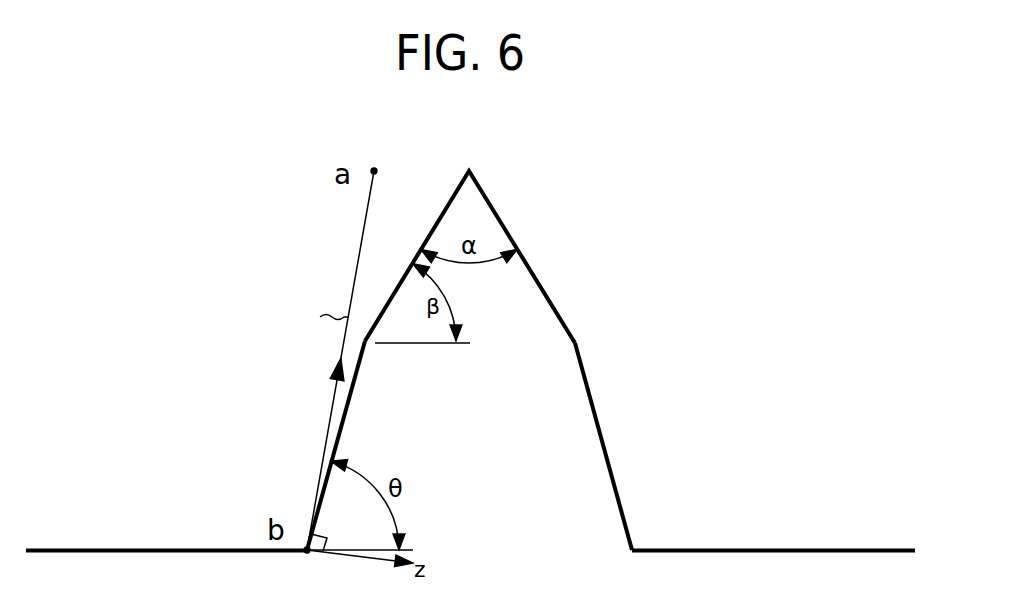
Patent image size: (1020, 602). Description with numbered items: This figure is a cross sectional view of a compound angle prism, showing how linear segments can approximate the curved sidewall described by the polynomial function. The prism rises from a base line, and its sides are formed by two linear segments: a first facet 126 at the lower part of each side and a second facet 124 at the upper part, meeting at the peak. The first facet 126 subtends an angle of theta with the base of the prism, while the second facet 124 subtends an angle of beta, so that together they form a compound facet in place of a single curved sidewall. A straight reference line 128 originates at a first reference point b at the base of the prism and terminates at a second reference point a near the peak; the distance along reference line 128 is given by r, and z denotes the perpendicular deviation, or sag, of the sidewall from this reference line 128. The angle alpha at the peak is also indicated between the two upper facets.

The second facet 124 is at (382, 317).
The first facet 126 is at (341, 432).
The straight reference line 128 is at (357, 263).